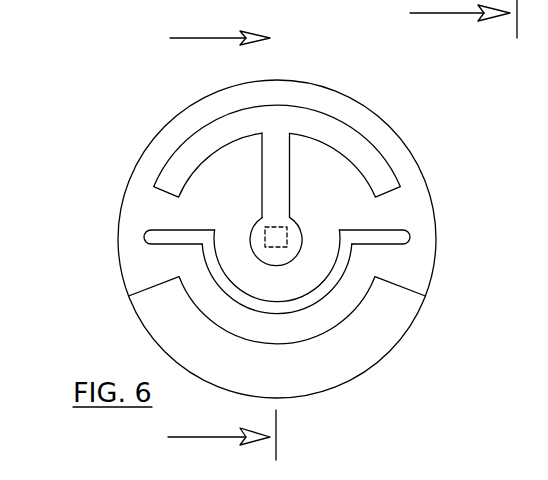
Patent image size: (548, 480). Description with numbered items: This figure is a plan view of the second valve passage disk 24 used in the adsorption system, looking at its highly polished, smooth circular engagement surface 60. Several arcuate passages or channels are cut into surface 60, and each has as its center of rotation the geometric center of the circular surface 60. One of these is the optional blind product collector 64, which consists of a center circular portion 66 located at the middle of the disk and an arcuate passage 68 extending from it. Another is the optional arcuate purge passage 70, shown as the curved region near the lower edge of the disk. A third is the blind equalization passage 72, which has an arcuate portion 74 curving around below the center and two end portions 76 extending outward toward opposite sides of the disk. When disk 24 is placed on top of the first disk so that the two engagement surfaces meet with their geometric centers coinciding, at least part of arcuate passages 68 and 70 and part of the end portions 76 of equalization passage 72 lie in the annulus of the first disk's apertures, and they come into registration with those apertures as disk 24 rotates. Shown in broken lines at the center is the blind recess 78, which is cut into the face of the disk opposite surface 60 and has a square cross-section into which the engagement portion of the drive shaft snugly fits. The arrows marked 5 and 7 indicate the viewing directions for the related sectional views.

The section view arrow 5 is at (463, 33).
The section line 7- 7 is at (222, 243).
The valve passage disk 24 is at (305, 239).
The circular engagement surface 60 is at (275, 239).
The blind product collector 64 is at (194, 156).
The center circular portion 66 is at (352, 296).
The arcuate passage 68 is at (277, 133).
The arcuate purge passage 70 is at (253, 377).
The blind equalization passage 72 is at (205, 269).
The arcuate portion 74 is at (303, 305).
The end portions 76 is at (153, 238).
The blind recess 78 is at (379, 216).